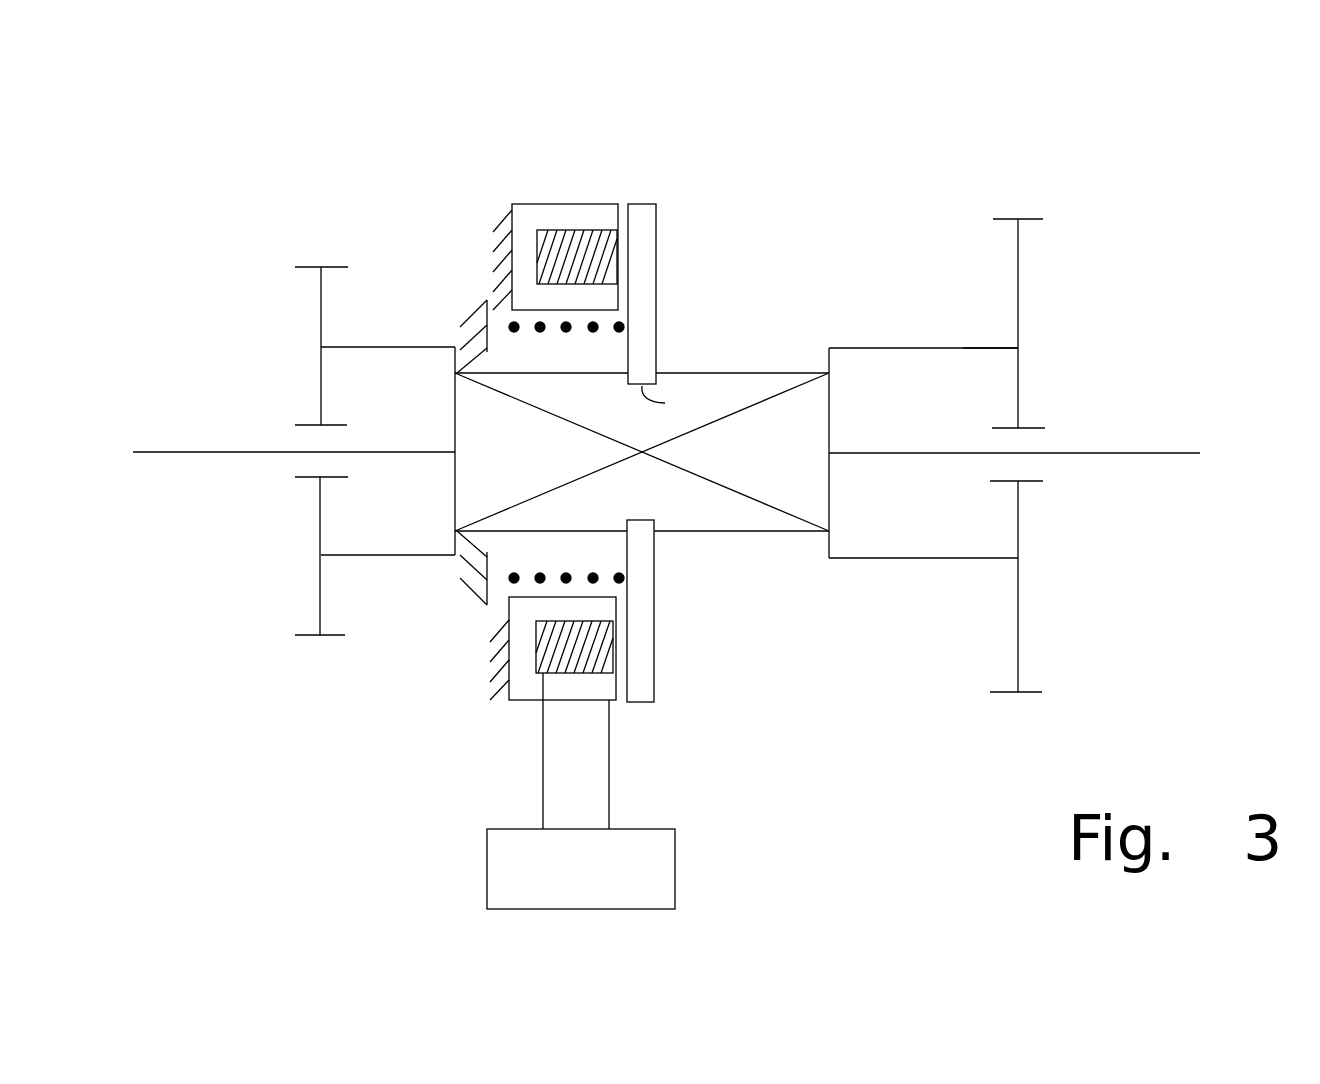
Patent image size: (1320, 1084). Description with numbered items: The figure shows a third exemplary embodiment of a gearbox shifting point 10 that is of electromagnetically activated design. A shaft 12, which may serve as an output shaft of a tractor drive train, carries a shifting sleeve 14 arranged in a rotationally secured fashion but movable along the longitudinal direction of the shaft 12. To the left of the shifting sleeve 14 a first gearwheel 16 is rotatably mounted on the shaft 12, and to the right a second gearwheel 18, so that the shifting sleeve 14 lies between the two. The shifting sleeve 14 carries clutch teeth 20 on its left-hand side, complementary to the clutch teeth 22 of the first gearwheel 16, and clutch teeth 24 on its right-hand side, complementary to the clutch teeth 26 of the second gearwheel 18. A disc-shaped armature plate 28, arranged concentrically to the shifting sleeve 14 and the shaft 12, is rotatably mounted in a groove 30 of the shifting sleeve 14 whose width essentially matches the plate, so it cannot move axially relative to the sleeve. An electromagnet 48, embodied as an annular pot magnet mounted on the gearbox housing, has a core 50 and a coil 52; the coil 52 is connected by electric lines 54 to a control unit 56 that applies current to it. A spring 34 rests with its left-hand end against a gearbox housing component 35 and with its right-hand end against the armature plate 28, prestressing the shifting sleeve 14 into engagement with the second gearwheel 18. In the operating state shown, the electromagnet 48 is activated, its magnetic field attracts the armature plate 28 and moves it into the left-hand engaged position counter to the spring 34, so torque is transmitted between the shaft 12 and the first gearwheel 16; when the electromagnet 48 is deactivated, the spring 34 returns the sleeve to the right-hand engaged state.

The gearbox shifting point 10 is at (300, 848).
The shaft 12 is at (1155, 452).
The shifting sleeve 14 is at (743, 575).
The first gearwheel 16 is at (321, 312).
The second gearwheel 18 is at (1018, 258).
The clutch teeth 20 is at (412, 556).
The clutch teeth 22 is at (322, 535).
The clutch teeth 24 is at (886, 348).
The clutch teeth 26 is at (1003, 348).
The armature plate 28 is at (642, 232).
The groove 30 is at (665, 403).
The spring 34 is at (505, 322).
The gearbox housing component 35 is at (472, 580).
The electromagnet 48 is at (545, 143).
The core 50 is at (528, 690).
The coil 52 is at (540, 657).
The electric lines 54 is at (543, 757).
The control unit 56 is at (612, 887).